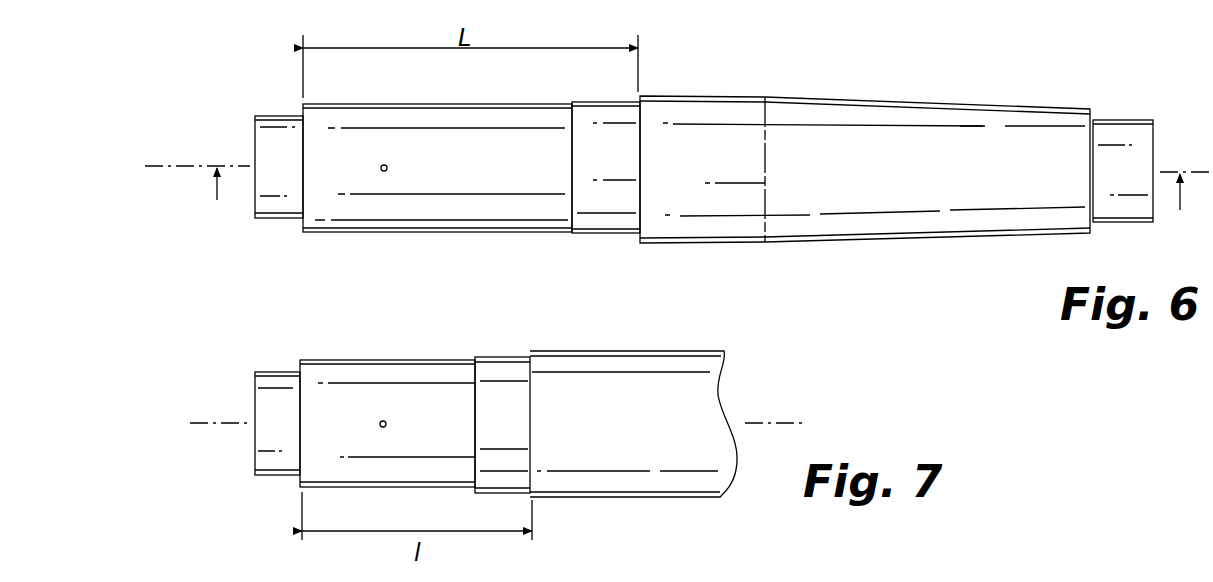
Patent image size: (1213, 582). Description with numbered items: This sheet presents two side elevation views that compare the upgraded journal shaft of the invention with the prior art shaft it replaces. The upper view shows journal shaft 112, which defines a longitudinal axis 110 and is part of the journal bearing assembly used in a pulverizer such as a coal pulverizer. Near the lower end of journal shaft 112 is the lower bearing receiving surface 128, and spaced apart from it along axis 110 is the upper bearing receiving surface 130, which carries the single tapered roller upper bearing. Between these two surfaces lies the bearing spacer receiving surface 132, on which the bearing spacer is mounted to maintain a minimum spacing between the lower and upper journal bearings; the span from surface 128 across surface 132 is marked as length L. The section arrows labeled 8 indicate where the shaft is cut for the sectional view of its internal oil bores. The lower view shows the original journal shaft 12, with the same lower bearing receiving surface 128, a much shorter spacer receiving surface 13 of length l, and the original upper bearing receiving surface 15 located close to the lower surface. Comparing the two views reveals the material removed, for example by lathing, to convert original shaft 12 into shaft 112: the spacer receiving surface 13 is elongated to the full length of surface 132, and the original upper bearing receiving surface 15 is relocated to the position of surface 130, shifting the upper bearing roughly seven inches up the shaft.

In FIG. 6, the longitudinal axis 110 is at (153, 160).
In FIG. 6, the lower bearing receiving surface 128 is at (276, 127).
In FIG. 7, the lower bearing receiving surface 128 is at (268, 382).
In FIG. 6, the bearing spacer receiving surface 132 is at (413, 108).
In FIG. 6, the upper bearing receiving surface 130 is at (607, 218).
In FIG. 6, the journal shaft 112 is at (1022, 90).
In FIG. 6, the section line 8- 8 is at (694, 209).
In FIG. 7, the original journal shaft 12 is at (502, 410).
In FIG. 7, the spacer receiving surface 13 is at (385, 465).
In FIG. 7, the original upper bearing receiving surface 15 is at (503, 370).